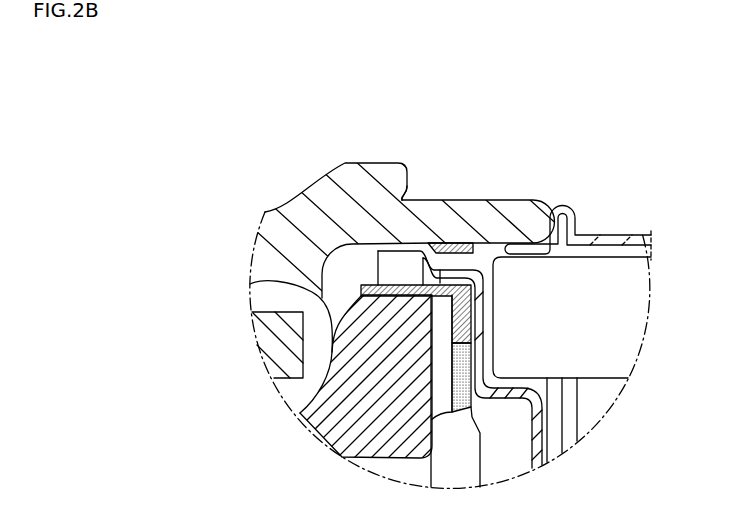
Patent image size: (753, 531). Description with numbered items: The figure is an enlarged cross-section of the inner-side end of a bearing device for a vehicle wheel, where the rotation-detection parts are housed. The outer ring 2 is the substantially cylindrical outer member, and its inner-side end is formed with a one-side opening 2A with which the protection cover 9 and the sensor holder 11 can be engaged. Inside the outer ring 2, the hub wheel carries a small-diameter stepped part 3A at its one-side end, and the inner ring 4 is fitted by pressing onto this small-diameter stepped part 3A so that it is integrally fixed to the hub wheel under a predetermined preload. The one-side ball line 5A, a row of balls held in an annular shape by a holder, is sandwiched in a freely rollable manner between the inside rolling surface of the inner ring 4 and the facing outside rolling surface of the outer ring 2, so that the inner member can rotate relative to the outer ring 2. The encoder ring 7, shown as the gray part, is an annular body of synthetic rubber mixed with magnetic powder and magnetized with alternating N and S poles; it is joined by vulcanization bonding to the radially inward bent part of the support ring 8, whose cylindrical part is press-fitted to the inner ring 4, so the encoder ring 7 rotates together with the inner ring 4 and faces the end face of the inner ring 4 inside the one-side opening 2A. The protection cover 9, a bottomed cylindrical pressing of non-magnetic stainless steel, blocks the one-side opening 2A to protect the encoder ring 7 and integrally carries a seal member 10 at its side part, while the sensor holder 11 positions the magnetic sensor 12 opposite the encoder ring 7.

The outer ring 2 is at (304, 170).
The one-side opening 2A is at (500, 246).
The small-diameter stepped part 3A is at (388, 473).
The inner ring 4 is at (329, 443).
The one-side ball line 5A is at (258, 297).
The encoder ring 7 is at (472, 355).
The support ring 8 is at (365, 286).
The protection cover 9 is at (411, 231).
The seal member 10 is at (450, 231).
The sensor holder 11 is at (607, 212).
The magnetic sensor 12 is at (640, 297).